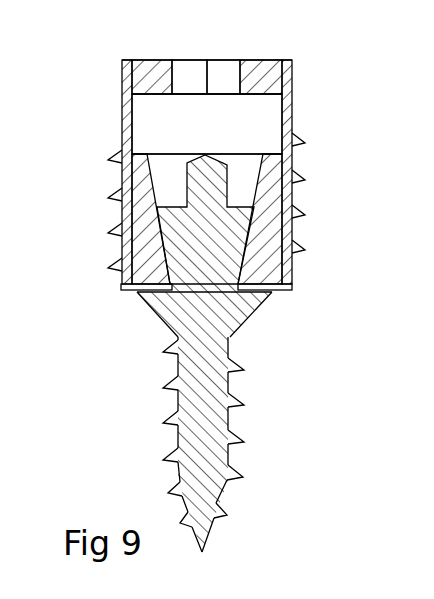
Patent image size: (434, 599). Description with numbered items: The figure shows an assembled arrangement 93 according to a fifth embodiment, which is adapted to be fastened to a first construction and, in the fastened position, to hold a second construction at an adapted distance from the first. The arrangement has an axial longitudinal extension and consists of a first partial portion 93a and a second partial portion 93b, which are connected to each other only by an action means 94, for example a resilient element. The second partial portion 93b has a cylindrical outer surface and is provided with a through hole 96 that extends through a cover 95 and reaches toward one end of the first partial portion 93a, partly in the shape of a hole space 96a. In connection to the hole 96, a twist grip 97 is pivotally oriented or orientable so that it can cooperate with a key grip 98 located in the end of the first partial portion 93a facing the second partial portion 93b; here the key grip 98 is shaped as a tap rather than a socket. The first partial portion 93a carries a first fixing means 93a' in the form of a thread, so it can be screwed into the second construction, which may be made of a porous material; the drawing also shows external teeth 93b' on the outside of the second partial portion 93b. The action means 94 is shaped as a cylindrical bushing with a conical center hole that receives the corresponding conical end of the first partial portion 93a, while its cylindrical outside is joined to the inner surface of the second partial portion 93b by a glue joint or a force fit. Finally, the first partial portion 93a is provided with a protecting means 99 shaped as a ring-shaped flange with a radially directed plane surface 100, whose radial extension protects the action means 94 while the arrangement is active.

The arrangement 93 is at (102, 328).
The first partial portion 93a is at (230, 418).
The first fixing means 93a' is at (243, 433).
The second partial portion 93b is at (245, 172).
The sleeve external teeth 93b' is at (249, 192).
The action means 94 is at (270, 238).
The cover 95 is at (148, 70).
The through hole 96 is at (226, 75).
The hole space 96a is at (150, 132).
The twist grip 97 is at (205, 68).
The key grip 98 is at (208, 167).
The protecting means 99 is at (262, 300).
The plane surface 100 is at (133, 289).